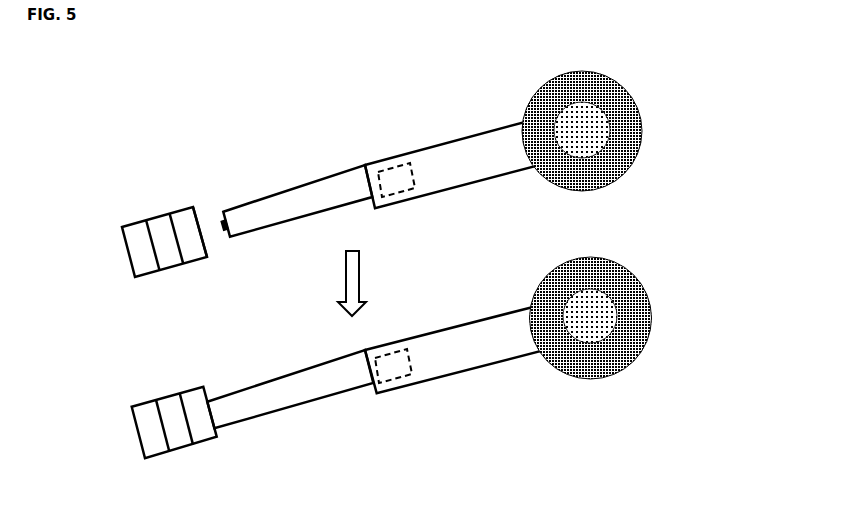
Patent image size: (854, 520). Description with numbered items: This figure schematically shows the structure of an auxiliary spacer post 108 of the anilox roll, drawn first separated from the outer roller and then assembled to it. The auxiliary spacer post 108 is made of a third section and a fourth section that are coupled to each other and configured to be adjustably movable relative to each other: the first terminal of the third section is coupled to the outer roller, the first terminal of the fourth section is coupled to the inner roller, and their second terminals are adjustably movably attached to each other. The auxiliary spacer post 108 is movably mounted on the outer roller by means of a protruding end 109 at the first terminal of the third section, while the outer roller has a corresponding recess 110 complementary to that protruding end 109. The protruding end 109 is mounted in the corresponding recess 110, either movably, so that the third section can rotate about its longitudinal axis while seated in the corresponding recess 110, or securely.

The auxiliary spacer post 108 is at (376, 396).
The protruding end 109 is at (229, 234).
The corresponding recess 110 is at (192, 230).